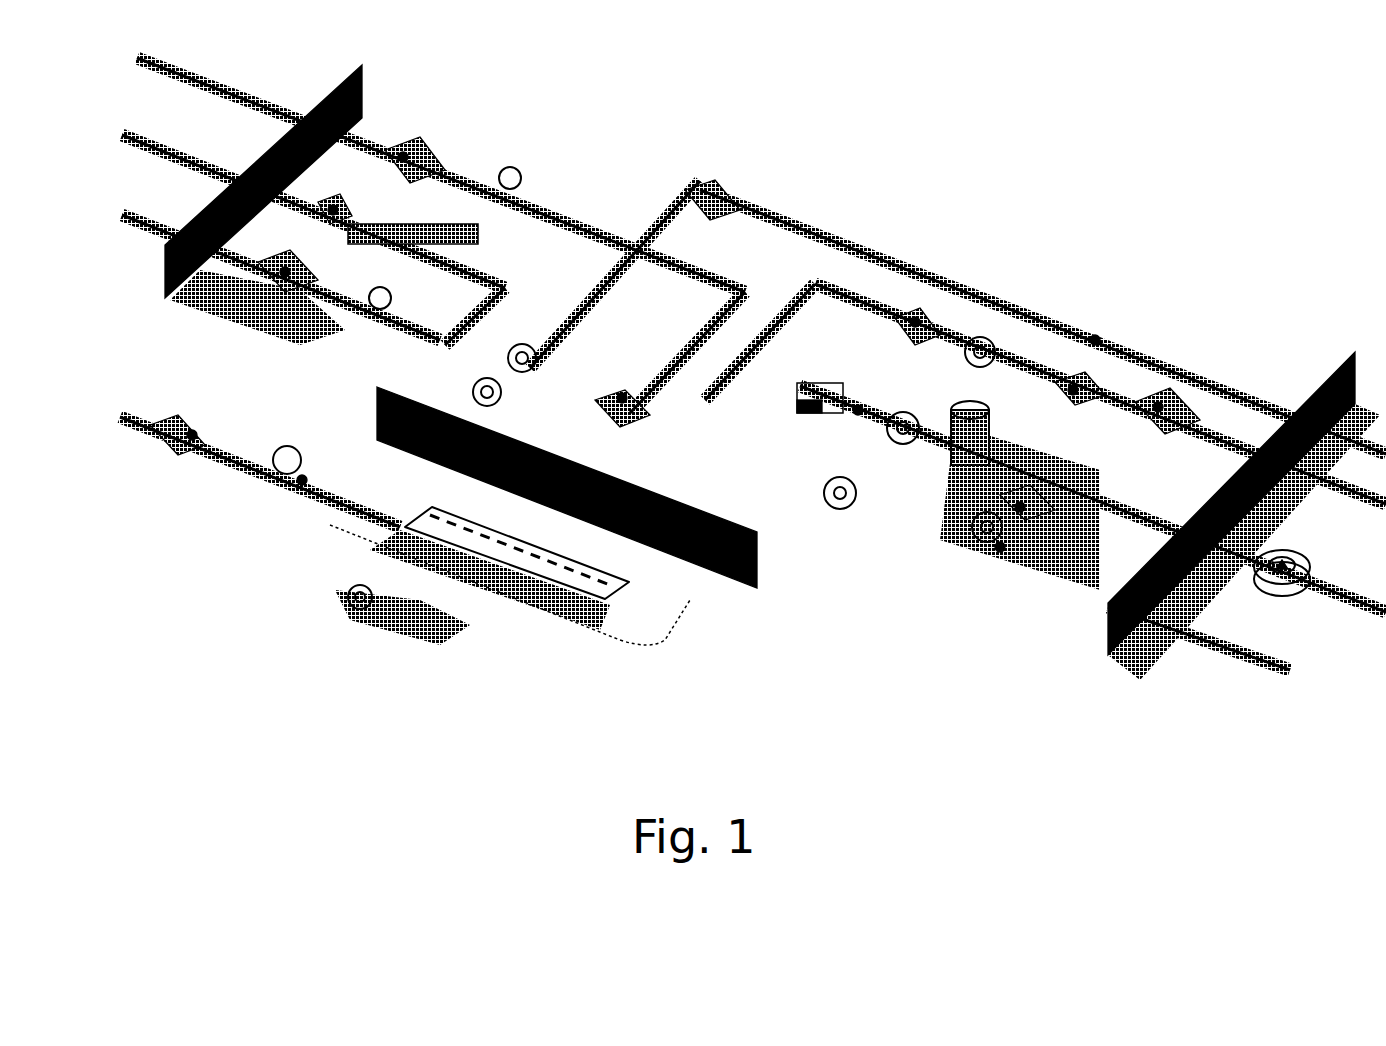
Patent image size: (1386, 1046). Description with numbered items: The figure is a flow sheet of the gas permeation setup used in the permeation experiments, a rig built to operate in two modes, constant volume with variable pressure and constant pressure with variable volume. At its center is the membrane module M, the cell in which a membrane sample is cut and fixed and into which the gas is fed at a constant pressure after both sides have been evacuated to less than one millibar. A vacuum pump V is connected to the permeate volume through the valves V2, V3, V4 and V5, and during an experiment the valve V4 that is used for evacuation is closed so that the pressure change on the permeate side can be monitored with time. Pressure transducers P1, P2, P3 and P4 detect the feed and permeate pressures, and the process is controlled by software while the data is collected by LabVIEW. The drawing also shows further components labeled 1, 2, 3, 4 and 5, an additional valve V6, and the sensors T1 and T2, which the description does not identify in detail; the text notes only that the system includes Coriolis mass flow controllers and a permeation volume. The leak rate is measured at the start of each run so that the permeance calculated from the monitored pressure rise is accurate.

The feed valve 1 is at (400, 143).
The control valve 2 is at (333, 205).
The valve 3 is at (245, 263).
The valve 4 is at (1160, 400).
The valve 5 is at (168, 460).
The temperature sensor T1 is at (522, 342).
The temperature sensor T2 is at (343, 598).
The pressure transducer P1 is at (470, 385).
The pressure transducer P2 is at (828, 515).
The pressure transducer P3 is at (973, 343).
The pressure transducer P4 is at (902, 448).
The vacuum pump V is at (1305, 548).
The valve V2 is at (923, 308).
The valve V3 is at (857, 392).
The valve V4 is at (1025, 470).
The valve V5 is at (1017, 525).
The valve V6 is at (1070, 377).
The membrane module M is at (430, 507).